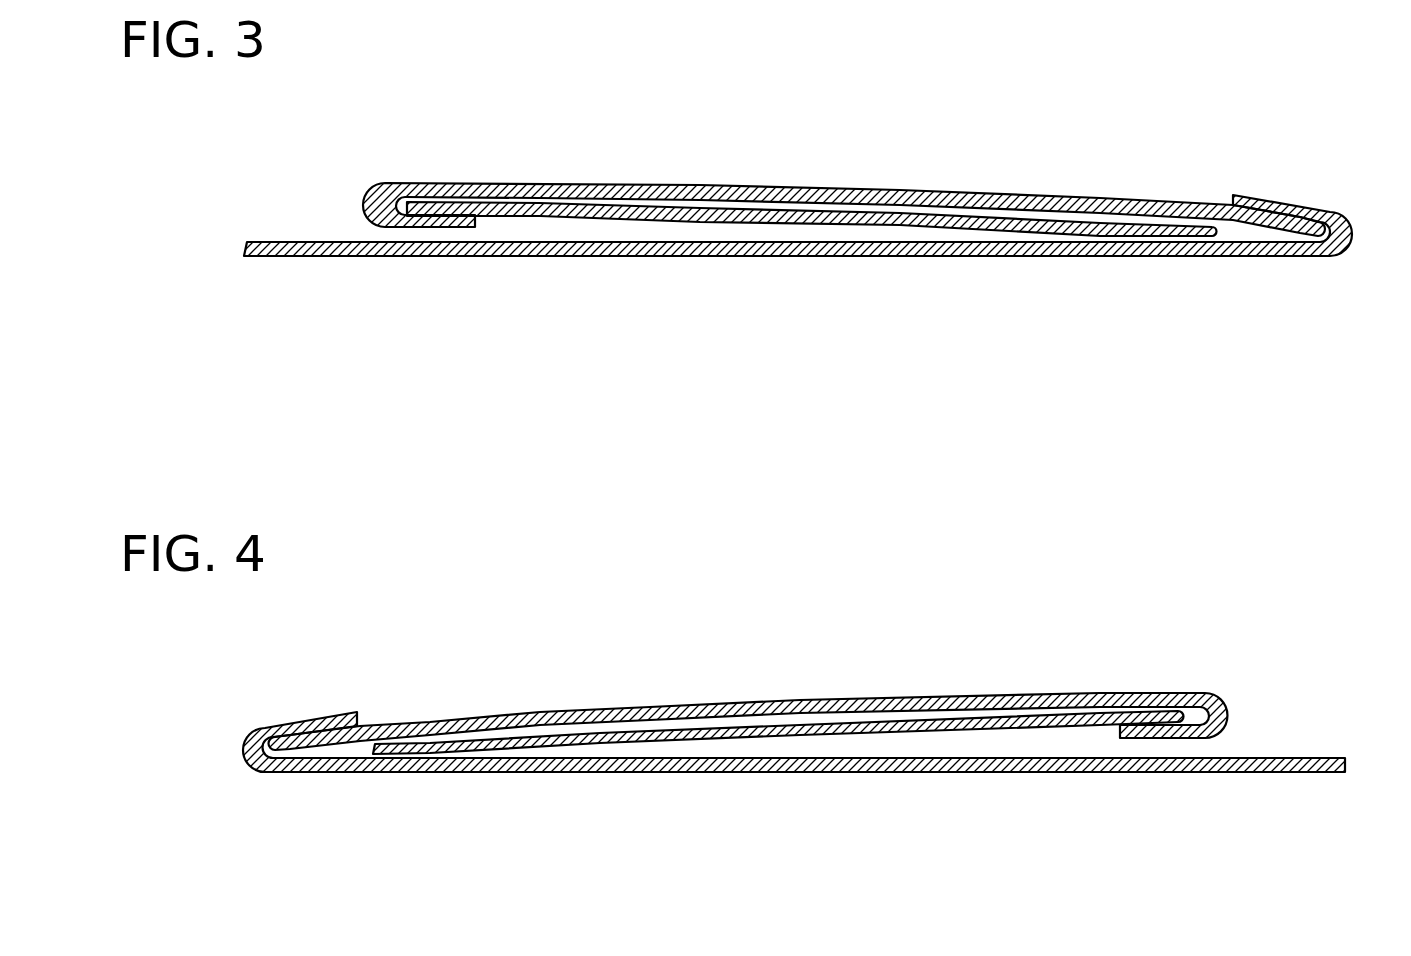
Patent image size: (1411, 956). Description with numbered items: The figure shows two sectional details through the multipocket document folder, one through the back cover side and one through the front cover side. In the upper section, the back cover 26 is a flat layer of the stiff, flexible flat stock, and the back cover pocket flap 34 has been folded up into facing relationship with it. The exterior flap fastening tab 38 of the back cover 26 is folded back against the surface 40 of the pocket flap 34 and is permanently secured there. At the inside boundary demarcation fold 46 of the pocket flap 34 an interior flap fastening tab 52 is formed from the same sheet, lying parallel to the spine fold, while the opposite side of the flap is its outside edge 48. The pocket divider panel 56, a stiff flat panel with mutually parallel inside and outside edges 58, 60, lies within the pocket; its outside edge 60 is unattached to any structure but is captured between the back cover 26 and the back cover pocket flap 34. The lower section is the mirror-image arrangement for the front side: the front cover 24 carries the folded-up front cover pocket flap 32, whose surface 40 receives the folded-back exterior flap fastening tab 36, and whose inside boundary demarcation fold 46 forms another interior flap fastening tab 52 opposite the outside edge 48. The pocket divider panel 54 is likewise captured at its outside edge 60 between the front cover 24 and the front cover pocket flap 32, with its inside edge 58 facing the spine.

In FIG. 4, the front cover 24 is at (680, 773).
In FIG. 3, the back cover 26 is at (652, 260).
In FIG. 4, the front cover pocket flap 32 is at (542, 710).
In FIG. 3, the back cover pocket flap 34 is at (920, 184).
In FIG. 4, the exterior flap fastening tab 36 is at (315, 713).
In FIG. 3, the exterior flap fastening tab 38 is at (1270, 195).
In FIG. 3, the surface of pocket cover flap 40 is at (1117, 197).
In FIG. 4, the surface of pocket cover flap 40 is at (427, 720).
In FIG. 3, the inside boundary demarcation fold 46 is at (362, 200).
In FIG. 4, the inside boundary demarcation fold 46 is at (1229, 713).
In FIG. 3, the outside edge 48 is at (1347, 247).
In FIG. 4, the outside edge 48 is at (243, 756).
In FIG. 3, the interior flap fastening tab 52 is at (447, 227).
In FIG. 4, the interior flap fastening tab 52 is at (1178, 740).
In FIG. 4, the pocket divider panel 54 is at (949, 742).
In FIG. 3, the pocket divider panel 56 is at (781, 226).
In FIG. 3, the inside edge 58 is at (395, 188).
In FIG. 4, the inside edge 58 is at (1205, 693).
In FIG. 3, the outside edge 60 is at (1237, 257).
In FIG. 4, the outside edge 60 is at (348, 775).